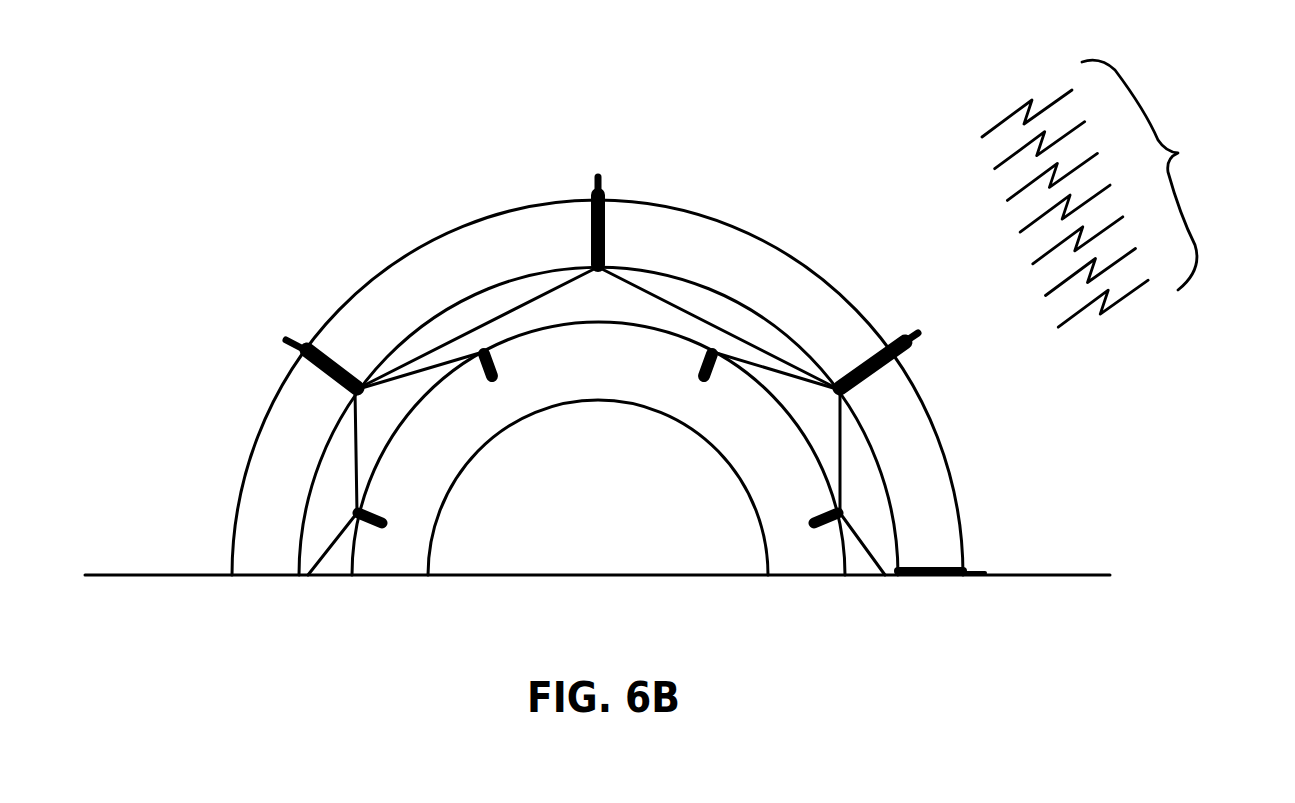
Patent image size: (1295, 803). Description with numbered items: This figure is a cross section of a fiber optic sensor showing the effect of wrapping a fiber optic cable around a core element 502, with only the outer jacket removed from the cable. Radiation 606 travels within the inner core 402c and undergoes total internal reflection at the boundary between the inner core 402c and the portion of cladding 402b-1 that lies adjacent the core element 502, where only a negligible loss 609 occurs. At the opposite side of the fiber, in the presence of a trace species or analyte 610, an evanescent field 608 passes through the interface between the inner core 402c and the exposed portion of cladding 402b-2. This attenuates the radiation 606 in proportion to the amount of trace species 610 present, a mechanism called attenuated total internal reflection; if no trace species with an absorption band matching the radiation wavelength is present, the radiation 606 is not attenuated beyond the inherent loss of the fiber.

The portion of cladding adjacent core element 402b-1 is at (390, 557).
The exposed portion of cladding 402b-2 is at (263, 557).
The inner core 402c is at (860, 563).
The core element 502 is at (430, 565).
The radiation 606 is at (860, 540).
The evanescent field 608 is at (606, 225).
The negligible loss 609 is at (704, 378).
The trace species or analyte 610 is at (1178, 153).